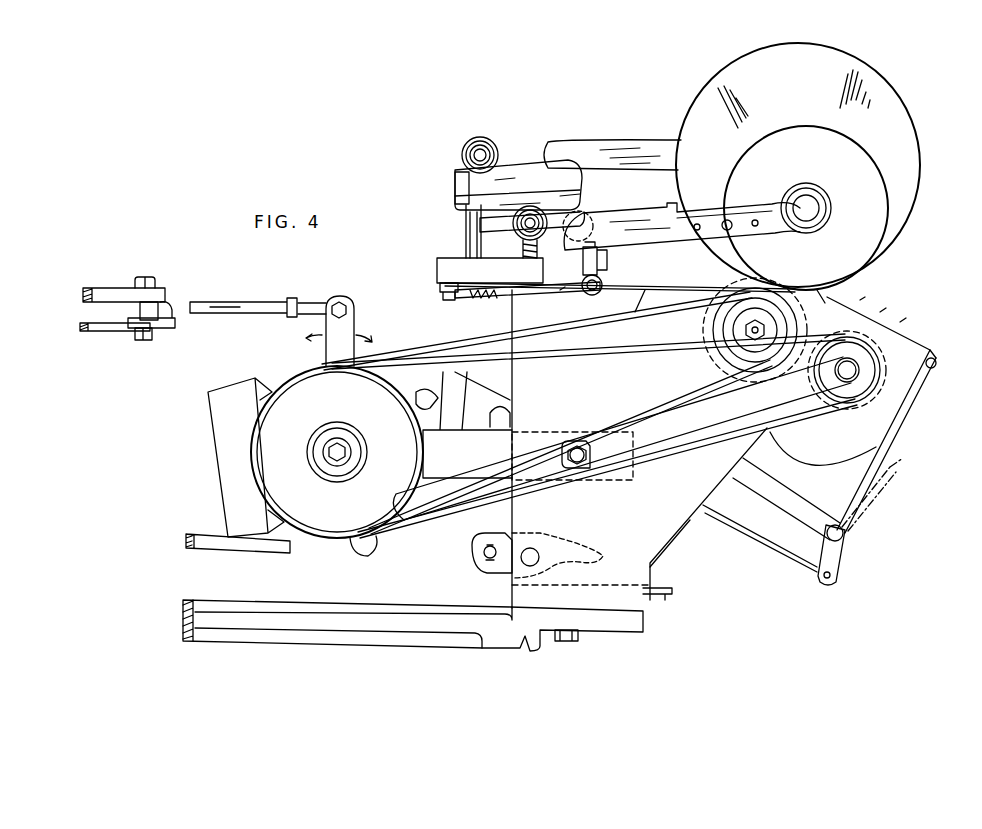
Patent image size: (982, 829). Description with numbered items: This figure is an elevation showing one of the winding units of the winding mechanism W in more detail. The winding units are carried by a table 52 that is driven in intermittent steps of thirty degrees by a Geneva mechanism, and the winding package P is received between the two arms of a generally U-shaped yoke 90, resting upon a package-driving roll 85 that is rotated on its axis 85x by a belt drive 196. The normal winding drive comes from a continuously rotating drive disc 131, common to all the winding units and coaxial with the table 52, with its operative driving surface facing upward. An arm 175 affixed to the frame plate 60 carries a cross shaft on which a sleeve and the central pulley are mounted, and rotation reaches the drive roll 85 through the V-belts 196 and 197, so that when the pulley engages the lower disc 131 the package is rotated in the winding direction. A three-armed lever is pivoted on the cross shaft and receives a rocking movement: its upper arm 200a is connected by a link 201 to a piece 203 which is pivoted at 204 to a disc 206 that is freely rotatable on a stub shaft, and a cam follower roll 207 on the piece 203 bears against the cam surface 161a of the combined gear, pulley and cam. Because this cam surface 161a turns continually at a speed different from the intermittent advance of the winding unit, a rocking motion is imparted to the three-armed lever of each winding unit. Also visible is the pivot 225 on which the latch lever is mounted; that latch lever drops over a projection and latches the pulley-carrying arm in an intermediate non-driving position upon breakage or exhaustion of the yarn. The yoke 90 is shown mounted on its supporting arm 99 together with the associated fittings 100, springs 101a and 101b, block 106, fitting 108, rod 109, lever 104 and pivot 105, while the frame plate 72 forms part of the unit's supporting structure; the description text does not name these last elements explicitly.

The roll of paper P is at (904, 108).
The winding mechanism W is at (676, 103).
The U-shaped yoke 90 is at (617, 163).
The arm 99 is at (515, 168).
The tab 100 is at (455, 192).
The spring 101a is at (483, 140).
The spring 101b is at (547, 231).
The block 106 is at (437, 284).
The fitting 108 is at (440, 297).
The rod 109 is at (522, 296).
The lever 104 is at (605, 262).
The pivot 105 is at (594, 294).
The package-driving roll 85 is at (733, 270).
The frame plate 72 is at (833, 297).
The arm 175 is at (381, 461).
The drive disc 131 is at (240, 543).
The axis of drive roll 85x is at (710, 328).
The belt drive 196 is at (688, 309).
The V-belt 197 is at (598, 355).
The frame plate 60 is at (622, 449).
The pivot 225 is at (535, 552).
The table 52 is at (612, 626).
The upper arm 200a is at (330, 343).
The link 201 is at (241, 313).
The disc 206 is at (100, 290).
The pivot 204 is at (157, 294).
The piece 203 is at (170, 322).
The cam follower roll 207 is at (142, 334).
The cam surface 161a is at (87, 336).